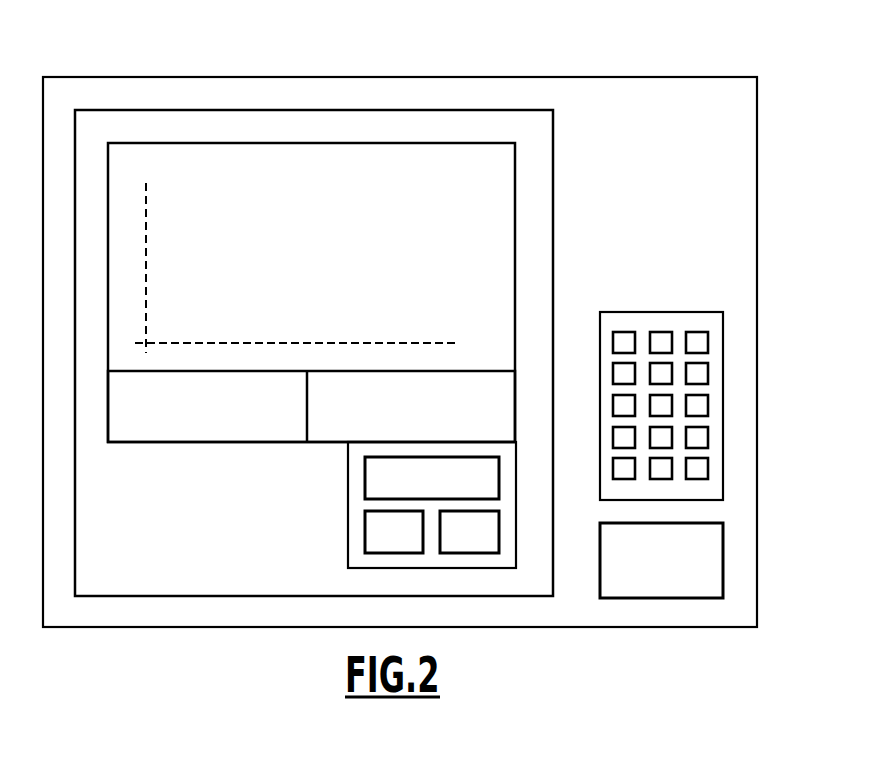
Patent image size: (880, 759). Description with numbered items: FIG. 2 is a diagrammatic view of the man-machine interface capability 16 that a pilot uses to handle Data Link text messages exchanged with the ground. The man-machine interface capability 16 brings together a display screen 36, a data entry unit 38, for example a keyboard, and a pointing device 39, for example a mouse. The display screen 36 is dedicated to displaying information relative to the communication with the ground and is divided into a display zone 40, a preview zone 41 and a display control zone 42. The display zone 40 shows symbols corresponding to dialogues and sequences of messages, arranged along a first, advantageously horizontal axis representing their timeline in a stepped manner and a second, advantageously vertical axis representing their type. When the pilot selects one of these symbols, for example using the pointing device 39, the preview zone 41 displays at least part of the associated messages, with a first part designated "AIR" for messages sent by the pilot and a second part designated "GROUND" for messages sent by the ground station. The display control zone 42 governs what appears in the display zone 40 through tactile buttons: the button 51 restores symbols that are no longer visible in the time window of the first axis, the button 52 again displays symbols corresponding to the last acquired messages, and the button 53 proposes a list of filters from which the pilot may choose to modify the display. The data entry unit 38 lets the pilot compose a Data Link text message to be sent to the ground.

The man-machine interface capability 16 is at (677, 77).
The display screen 36 is at (598, 157).
The display zone 40 is at (567, 251).
The preview zone 41 is at (567, 410).
The display control zone 42 is at (471, 505).
The button 51 is at (394, 532).
The button 52 is at (469, 532).
The button 53 is at (432, 478).
The data entry unit 38 is at (660, 312).
The pointing device 39 is at (661, 560).